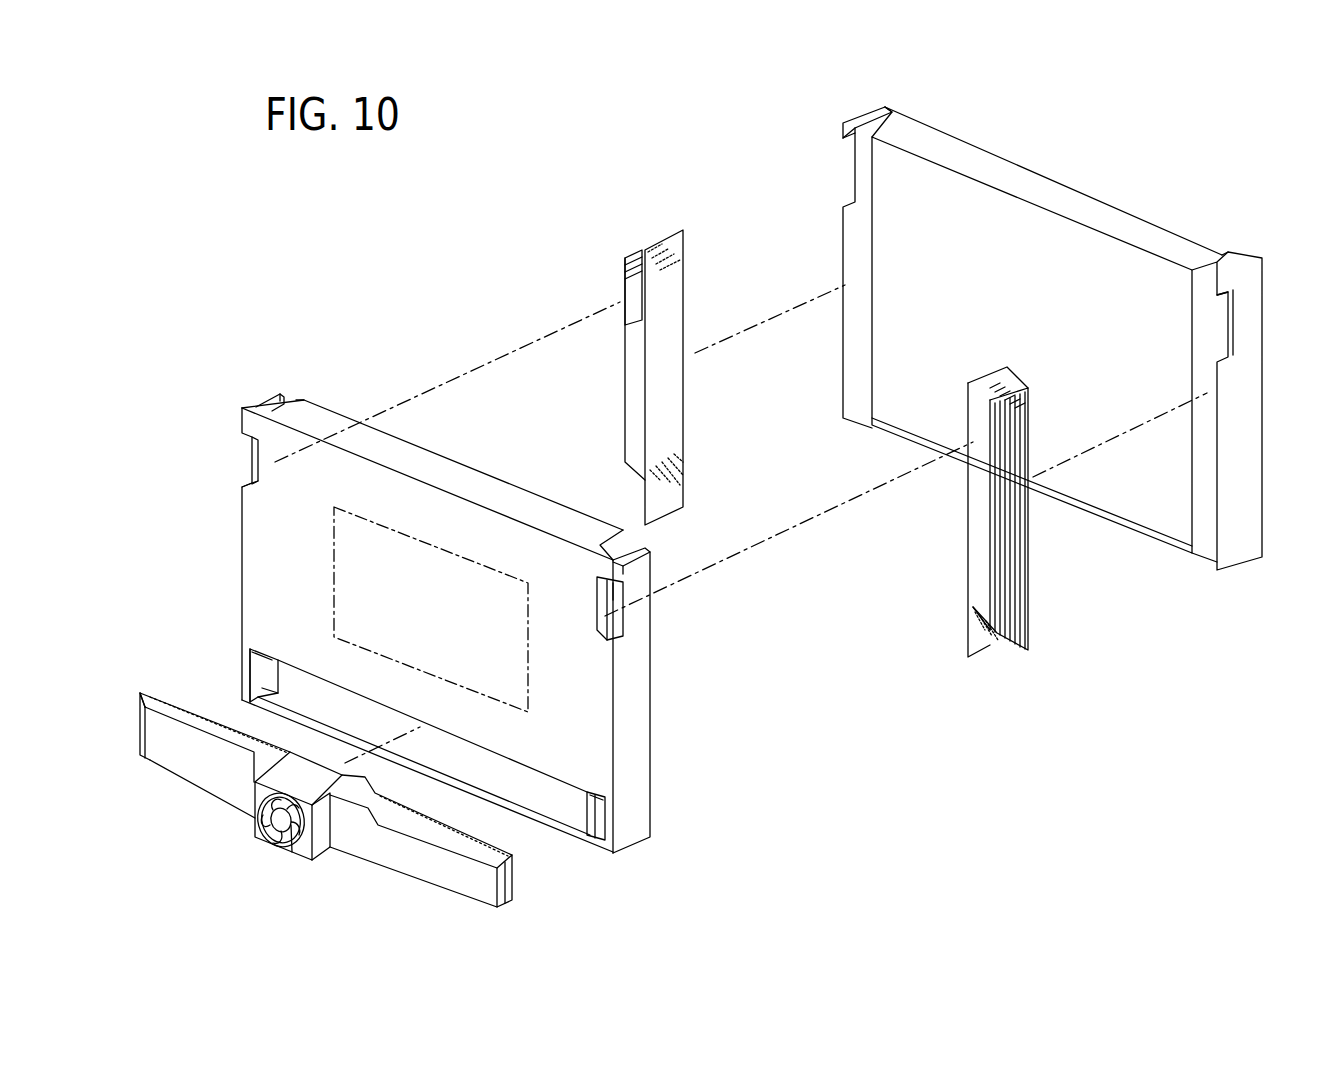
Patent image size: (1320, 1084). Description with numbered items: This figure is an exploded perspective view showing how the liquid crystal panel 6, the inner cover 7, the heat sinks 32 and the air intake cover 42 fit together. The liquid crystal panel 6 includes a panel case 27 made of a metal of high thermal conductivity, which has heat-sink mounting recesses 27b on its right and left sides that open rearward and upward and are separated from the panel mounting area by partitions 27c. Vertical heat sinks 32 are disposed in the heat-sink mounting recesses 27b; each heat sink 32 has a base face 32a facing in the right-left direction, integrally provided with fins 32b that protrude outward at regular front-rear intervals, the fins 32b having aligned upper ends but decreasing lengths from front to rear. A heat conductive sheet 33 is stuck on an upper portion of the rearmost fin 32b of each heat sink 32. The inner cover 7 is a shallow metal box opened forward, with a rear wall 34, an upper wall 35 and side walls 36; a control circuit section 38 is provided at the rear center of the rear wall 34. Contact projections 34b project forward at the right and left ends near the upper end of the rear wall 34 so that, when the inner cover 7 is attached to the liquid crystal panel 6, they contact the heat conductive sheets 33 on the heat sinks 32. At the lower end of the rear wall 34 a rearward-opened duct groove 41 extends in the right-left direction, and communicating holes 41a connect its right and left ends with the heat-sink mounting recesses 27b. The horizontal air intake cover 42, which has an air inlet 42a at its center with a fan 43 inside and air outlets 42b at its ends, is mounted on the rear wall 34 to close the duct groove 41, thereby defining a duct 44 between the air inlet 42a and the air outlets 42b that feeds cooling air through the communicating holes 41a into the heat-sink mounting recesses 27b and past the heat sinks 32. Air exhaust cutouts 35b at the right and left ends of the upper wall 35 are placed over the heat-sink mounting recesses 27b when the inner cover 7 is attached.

The liquid crystal panel 6 is at (1005, 158).
The inner cover 7 is at (322, 410).
The panel case 27 is at (1132, 220).
The heat-sink mounting recesses 27b is at (848, 142).
The partitions 27c is at (886, 110).
The heat sinks 32 is at (664, 392).
The base face 32a is at (665, 438).
The fins 32b is at (625, 258).
The heat conductive sheet 33 is at (627, 279).
The rear wall 34 is at (276, 524).
The contact projections 34b is at (250, 460).
The upper wall 35 is at (446, 466).
The air exhaust cutouts 35b is at (298, 400).
The side walls 36 is at (262, 398).
The control circuit section 38 is at (528, 714).
The duct groove 41 is at (585, 832).
The communicating holes 41a is at (248, 652).
The air intake cover 42 is at (540, 907).
The air inlet 42a is at (278, 844).
The air outlets 42b is at (175, 704).
The fan 43 is at (292, 852).
The duct 44 is at (720, 868).